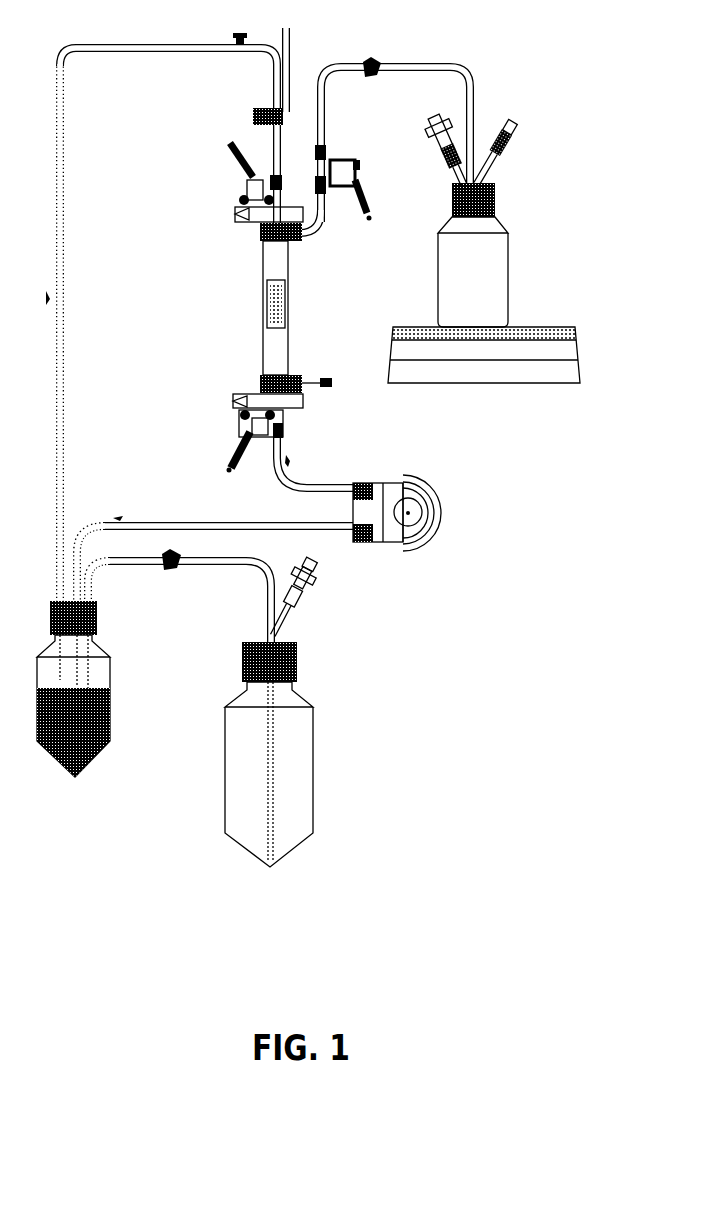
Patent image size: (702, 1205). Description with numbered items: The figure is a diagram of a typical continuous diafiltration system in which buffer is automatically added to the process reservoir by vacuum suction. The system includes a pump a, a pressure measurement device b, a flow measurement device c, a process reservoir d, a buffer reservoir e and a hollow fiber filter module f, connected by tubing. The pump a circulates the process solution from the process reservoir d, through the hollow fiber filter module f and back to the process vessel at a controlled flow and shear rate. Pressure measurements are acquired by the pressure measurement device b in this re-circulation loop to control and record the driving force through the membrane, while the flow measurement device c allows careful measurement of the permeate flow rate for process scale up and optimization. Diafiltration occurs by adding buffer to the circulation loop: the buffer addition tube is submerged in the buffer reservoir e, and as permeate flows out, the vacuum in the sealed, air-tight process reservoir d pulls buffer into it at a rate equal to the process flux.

The pump a is at (416, 513).
The pressure measurement device b is at (252, 396).
The flow measurement device c is at (508, 247).
The process reservoir d is at (73, 705).
The buffer reservoir e is at (274, 726).
The hollow fiber filter module f is at (296, 308).